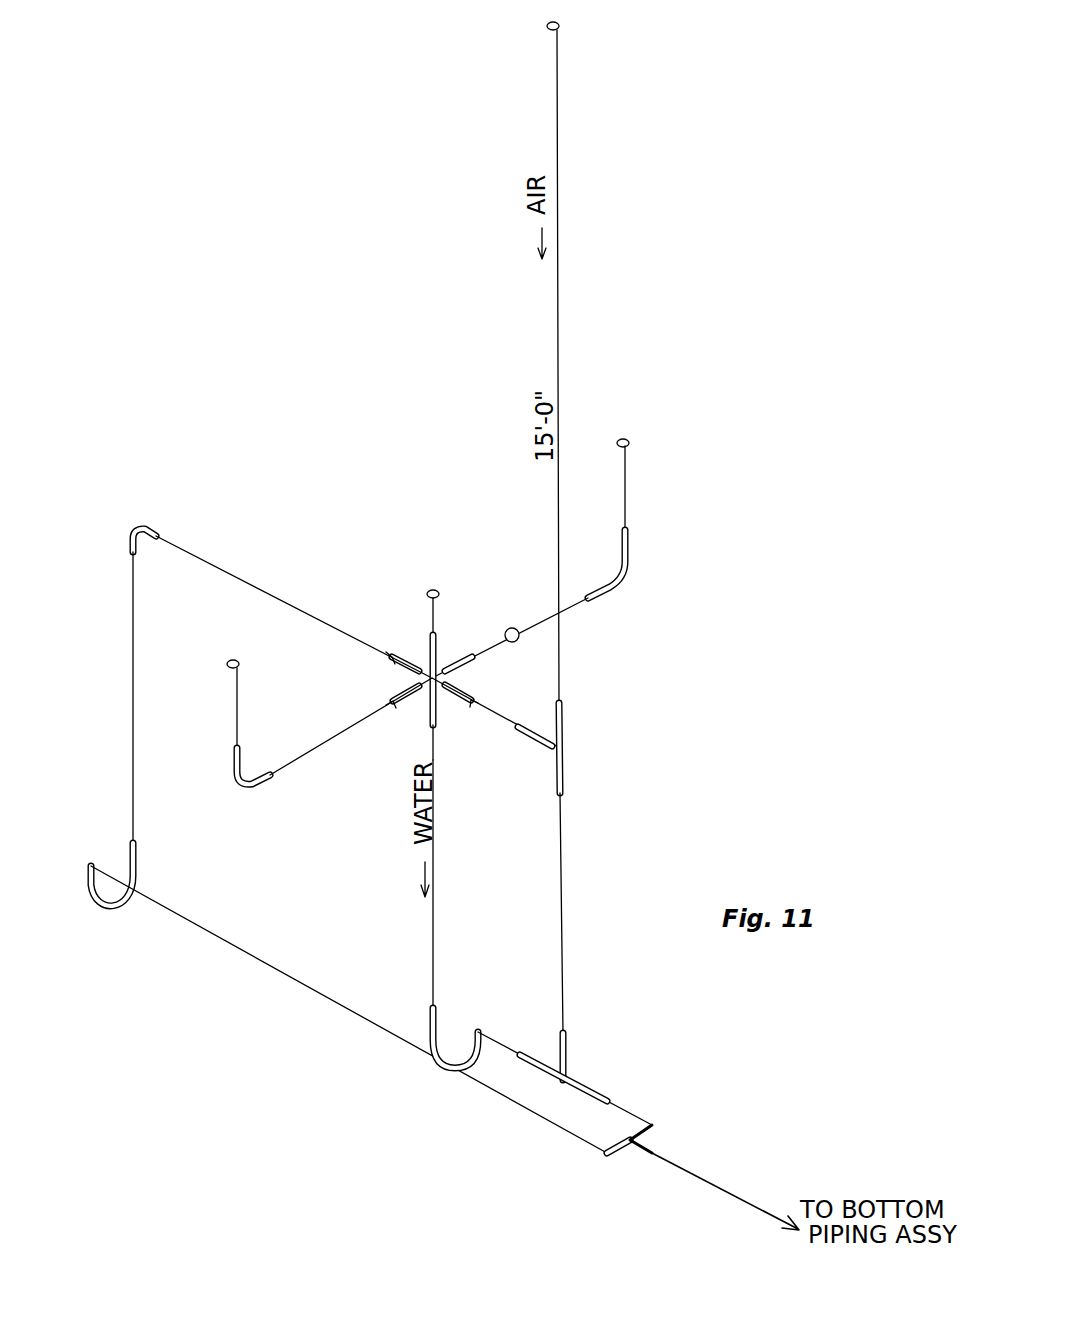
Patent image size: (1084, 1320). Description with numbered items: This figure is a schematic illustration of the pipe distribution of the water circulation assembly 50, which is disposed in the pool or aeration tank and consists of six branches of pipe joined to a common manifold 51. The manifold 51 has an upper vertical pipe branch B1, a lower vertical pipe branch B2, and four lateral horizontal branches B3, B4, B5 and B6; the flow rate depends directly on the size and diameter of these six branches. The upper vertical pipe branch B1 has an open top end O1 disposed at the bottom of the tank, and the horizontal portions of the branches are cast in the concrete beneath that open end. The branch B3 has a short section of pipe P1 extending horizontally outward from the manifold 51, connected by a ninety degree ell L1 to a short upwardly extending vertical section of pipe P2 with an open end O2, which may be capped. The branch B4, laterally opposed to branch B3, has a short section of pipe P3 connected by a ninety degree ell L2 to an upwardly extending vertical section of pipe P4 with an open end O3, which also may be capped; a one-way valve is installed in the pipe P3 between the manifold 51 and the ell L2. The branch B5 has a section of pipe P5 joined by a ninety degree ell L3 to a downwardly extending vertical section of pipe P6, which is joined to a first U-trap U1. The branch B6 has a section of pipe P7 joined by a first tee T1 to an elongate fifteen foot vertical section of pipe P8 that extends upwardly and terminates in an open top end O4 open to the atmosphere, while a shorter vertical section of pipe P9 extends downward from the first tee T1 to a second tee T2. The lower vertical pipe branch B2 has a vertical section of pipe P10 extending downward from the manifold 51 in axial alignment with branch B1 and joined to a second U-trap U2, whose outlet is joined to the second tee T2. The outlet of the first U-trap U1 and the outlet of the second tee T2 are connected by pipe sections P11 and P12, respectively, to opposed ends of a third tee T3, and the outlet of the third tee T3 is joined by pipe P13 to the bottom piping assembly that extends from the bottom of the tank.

The water circulation assembly 50 is at (697, 296).
The common manifold 51 is at (466, 626).
The open top end O1 is at (428, 593).
The open end O2 is at (240, 663).
The open end O3 is at (630, 443).
The open top end O4 is at (560, 26).
The short section of pipe P1 is at (320, 748).
The vertical section of pipe P2 is at (237, 718).
The short section of pipe P3 is at (563, 612).
The vertical section of pipe P4 is at (625, 487).
The section of pipe P5 is at (217, 567).
The vertical section of pipe P6 is at (133, 716).
The section of pipe P7 is at (492, 718).
The elongate 15-foot vertical section of pipe P8 is at (558, 196).
The vertical section of pipe P9 is at (563, 890).
The vertical section of pipe P10 is at (436, 892).
The pipe section P11 is at (283, 973).
The pipe section P12 is at (620, 1108).
The pipe P13 is at (713, 1180).
The upper vertical pipe branch B1 is at (430, 608).
The lower vertical pipe branch B2 is at (435, 842).
The lateral horizontal branch B3 is at (348, 728).
The lateral horizontal branch B4 is at (522, 640).
The lateral horizontal branch B5 is at (298, 607).
The lateral horizontal branch B6 is at (497, 714).
The 90° ell L1 is at (243, 790).
The 90° ell L2 is at (622, 572).
The 90° ell L3 is at (145, 528).
The first tee T1 is at (566, 750).
The second tee T2 is at (580, 1080).
The third tee T3 is at (653, 1143).
The first U-trap U1 is at (128, 853).
The second U-trap U2 is at (440, 1022).